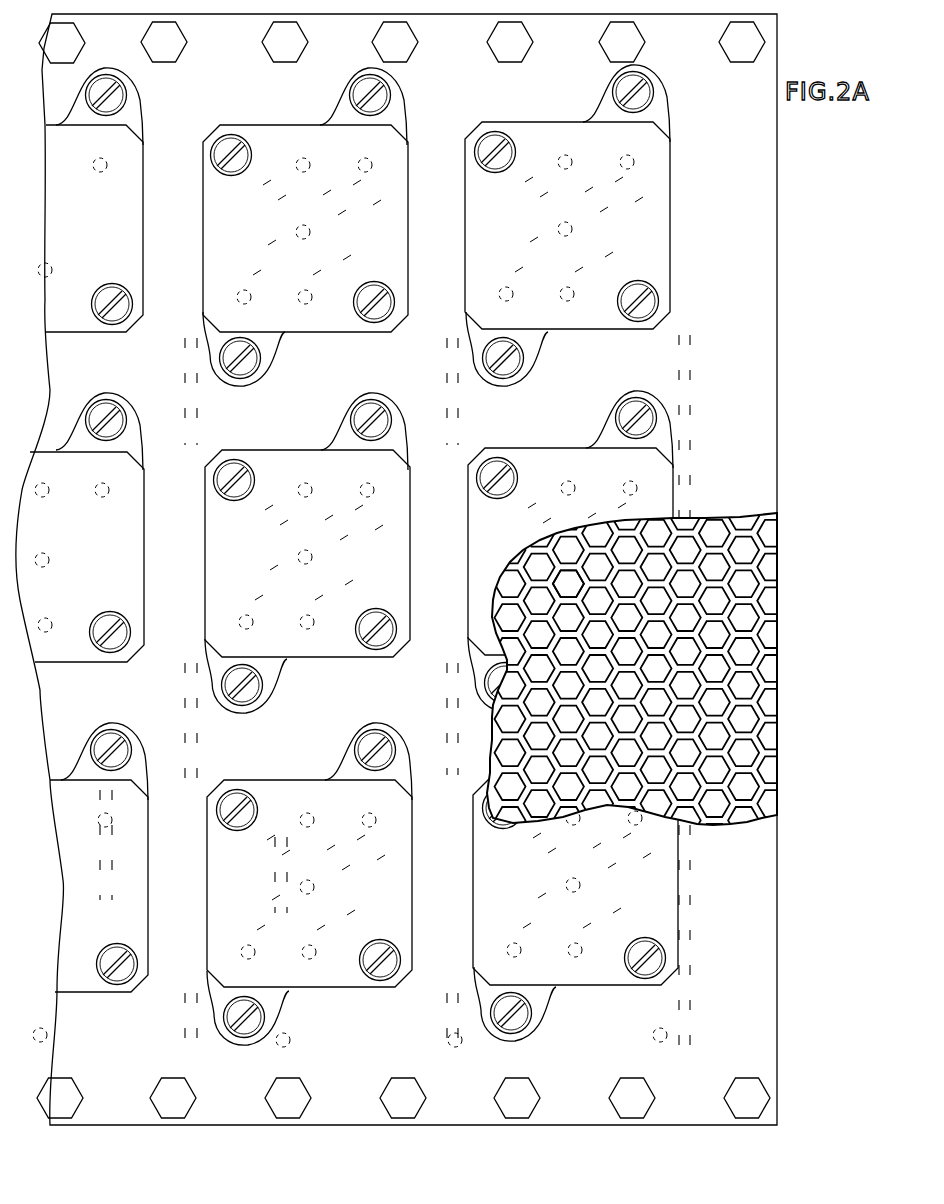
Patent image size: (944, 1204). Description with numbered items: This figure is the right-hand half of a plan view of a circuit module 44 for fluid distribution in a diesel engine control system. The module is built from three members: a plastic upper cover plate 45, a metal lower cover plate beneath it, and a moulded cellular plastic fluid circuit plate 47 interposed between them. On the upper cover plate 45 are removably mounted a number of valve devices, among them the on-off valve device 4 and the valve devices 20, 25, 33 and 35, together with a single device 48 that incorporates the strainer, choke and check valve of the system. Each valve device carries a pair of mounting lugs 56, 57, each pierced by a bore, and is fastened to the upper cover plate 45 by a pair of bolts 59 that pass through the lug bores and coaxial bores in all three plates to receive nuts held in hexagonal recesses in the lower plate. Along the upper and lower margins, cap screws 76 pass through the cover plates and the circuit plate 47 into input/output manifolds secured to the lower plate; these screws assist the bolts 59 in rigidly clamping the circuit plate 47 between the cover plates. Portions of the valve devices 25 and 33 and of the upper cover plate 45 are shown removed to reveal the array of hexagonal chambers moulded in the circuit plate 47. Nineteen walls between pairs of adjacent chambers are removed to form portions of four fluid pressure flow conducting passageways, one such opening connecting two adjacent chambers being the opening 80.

The on-off valve device 4 is at (460, 238).
The valve device 20 is at (198, 222).
The valve device 25 is at (468, 898).
The valve device 33 is at (461, 520).
The valve device 35 is at (200, 608).
The circuit module 44 is at (278, 406).
The upper cover plate 45 is at (775, 358).
The fluid circuit plate 47 is at (771, 557).
The single device 48 is at (420, 870).
The mounting lug 56 is at (268, 340).
The mounting lug 57 is at (133, 100).
The bolt 59 is at (90, 88).
The cap screw 76 is at (150, 38).
The opening 80 is at (580, 576).